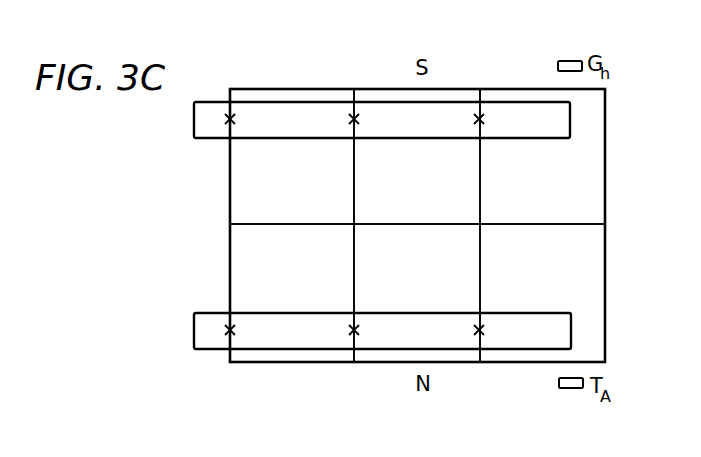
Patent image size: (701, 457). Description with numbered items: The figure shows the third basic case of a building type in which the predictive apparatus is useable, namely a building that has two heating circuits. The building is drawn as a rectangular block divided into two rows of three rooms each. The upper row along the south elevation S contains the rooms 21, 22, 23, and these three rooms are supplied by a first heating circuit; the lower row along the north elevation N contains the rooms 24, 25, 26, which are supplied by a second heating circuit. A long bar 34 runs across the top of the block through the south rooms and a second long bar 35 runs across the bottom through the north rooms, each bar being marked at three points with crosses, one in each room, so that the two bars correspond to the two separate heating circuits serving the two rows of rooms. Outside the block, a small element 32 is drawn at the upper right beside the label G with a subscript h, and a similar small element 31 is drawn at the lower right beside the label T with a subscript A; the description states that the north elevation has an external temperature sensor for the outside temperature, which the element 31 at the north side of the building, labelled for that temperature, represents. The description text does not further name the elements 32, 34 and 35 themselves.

The room 21 is at (302, 196).
The room 22 is at (427, 196).
The room 23 is at (552, 196).
The room 24 is at (302, 286).
The room 25 is at (427, 286).
The room 26 is at (552, 286).
The ambient temperature sensor 31 is at (575, 420).
The heater thermal conductance element 32 is at (572, 32).
The upper heater bar 34 is at (213, 120).
The lower heater bar 35 is at (211, 331).